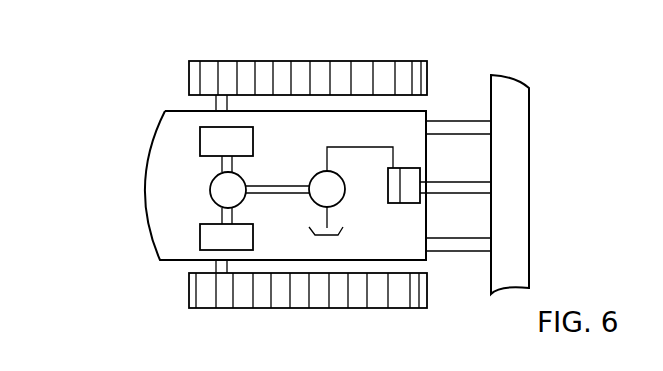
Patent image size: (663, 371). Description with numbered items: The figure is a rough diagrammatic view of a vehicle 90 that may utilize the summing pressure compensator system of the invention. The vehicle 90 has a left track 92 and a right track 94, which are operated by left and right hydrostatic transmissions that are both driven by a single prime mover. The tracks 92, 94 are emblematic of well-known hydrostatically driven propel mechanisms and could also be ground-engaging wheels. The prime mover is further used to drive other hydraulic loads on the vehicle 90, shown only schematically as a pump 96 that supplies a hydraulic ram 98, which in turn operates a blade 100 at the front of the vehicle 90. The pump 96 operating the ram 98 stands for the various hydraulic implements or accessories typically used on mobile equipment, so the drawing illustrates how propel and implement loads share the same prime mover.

The vehicle 90 is at (145, 238).
The left track 92 is at (302, 68).
The right track 94 is at (317, 300).
The pump 96 is at (342, 200).
The hydraulic ram 98 is at (408, 167).
The blade 100 is at (519, 193).